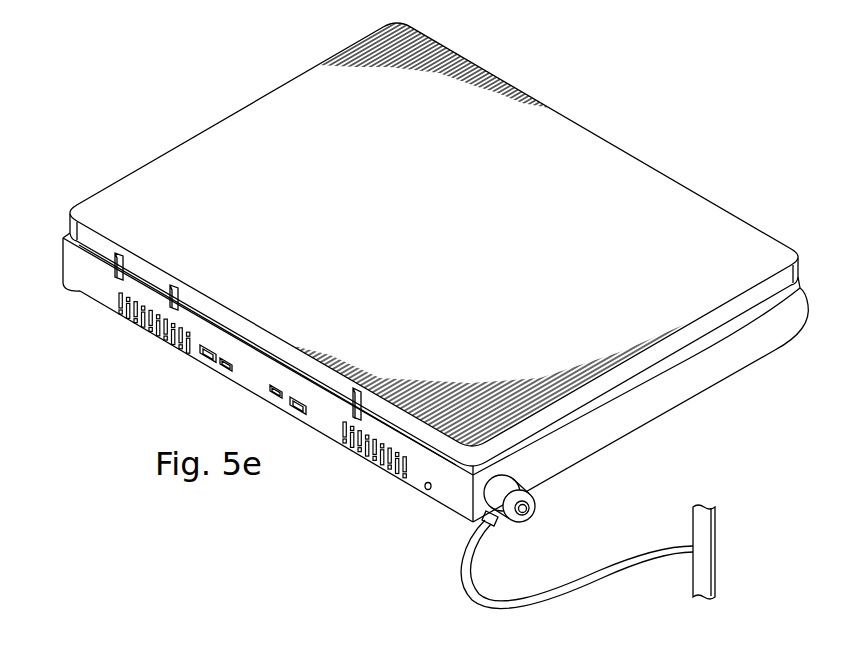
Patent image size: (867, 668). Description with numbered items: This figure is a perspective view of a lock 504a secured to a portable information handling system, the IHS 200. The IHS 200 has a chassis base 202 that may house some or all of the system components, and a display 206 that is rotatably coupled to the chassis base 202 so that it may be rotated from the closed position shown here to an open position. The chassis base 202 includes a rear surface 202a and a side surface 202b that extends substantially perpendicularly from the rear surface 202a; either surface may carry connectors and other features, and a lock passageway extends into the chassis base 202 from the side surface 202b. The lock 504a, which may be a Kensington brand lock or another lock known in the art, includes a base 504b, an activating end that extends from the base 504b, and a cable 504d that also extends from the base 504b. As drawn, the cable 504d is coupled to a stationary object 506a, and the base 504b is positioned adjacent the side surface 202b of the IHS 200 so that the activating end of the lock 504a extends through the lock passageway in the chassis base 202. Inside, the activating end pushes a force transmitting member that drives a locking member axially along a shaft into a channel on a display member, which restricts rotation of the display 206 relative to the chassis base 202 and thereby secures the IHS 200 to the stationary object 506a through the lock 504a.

The IHS 200 is at (420, 285).
The display 206 is at (446, 242).
The chassis base 202 is at (420, 393).
The rear surface 202a is at (107, 302).
The side surface 202b is at (681, 397).
The lock 504a is at (545, 543).
The base 504b is at (537, 513).
The cable 504d is at (463, 587).
The stationary object 506a is at (715, 572).